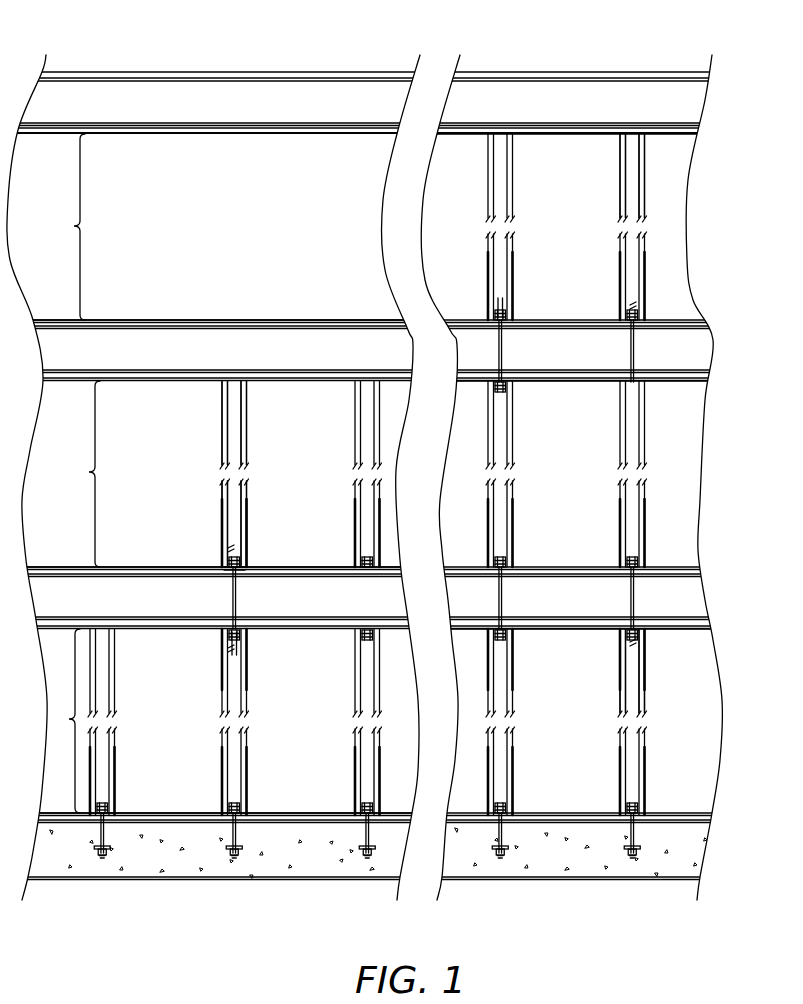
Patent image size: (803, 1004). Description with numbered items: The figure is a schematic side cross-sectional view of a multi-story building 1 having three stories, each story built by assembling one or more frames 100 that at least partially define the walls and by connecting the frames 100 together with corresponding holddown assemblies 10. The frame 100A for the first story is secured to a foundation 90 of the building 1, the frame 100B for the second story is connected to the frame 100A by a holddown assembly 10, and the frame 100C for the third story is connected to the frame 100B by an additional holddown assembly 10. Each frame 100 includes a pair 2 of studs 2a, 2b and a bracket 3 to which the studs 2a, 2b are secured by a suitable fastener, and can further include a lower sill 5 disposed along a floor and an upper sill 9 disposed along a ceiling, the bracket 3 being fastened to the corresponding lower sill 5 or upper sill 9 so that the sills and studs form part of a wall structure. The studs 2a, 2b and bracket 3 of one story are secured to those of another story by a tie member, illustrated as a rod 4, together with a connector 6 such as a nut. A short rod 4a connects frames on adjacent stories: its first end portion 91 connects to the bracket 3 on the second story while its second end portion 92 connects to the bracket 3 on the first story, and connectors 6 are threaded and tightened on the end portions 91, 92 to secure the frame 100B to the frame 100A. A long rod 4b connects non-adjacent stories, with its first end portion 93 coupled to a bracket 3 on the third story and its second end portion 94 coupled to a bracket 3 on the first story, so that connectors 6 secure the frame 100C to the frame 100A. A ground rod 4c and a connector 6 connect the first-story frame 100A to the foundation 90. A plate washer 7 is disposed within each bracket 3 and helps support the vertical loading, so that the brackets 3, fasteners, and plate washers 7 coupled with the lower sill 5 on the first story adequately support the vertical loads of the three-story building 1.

The multi-story building 1 is at (401, 461).
The pair of studs 2 is at (207, 398).
The stud 2a is at (222, 441).
The stud 2b is at (248, 410).
The bracket 3 is at (355, 518).
The rod 4 is at (463, 474).
The short rod 4a is at (505, 355).
The long rod 4b is at (638, 355).
The ground rod 4c is at (105, 840).
The lower sill 5 is at (277, 322).
The connector 6 is at (625, 318).
The plate washer 7 is at (228, 570).
The upper sill 9 is at (538, 133).
The holddown assembly 10 is at (497, 305).
The foundation 90 is at (335, 862).
The first end portion of the short rod 91 is at (232, 555).
The second end portion of the short rod 92 is at (230, 650).
The first end portion of the long rod 93 is at (636, 305).
The second end portion of the long rod 94 is at (638, 645).
The frame 100 is at (692, 212).
The frame for the first story 100A is at (598, 608).
The frame for the second story 100B is at (183, 360).
The frame for the third story 100C is at (568, 113).